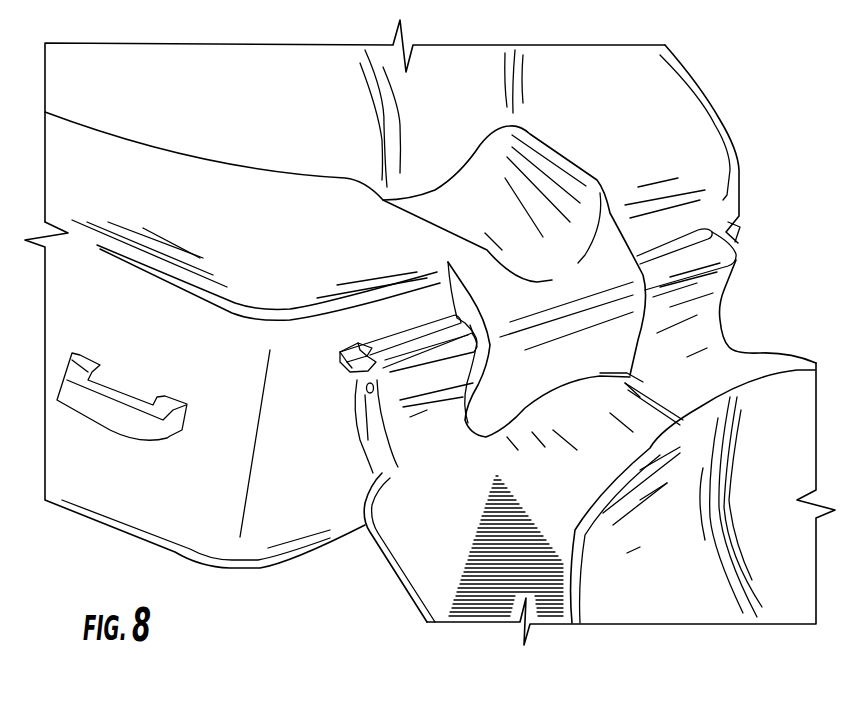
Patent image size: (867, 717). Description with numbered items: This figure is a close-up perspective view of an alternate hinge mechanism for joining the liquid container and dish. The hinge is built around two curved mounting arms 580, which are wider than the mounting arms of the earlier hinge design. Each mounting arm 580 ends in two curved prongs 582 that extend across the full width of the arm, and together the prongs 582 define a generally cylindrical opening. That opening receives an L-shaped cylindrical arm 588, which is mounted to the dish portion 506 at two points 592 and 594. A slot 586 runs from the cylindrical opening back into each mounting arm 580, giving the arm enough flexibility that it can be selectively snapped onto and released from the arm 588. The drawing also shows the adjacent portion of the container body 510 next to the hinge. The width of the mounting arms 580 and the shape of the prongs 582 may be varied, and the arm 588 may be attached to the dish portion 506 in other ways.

The dish portion 506 is at (243, 568).
The base housing 510 is at (766, 350).
The curved mounting arm 580 is at (720, 320).
The curved prong 582 is at (380, 382).
The slot 586 is at (342, 372).
The L-shaped cylindrical arm 588 is at (370, 352).
The mounting point 592 is at (332, 352).
The mounting point 594 is at (455, 316).